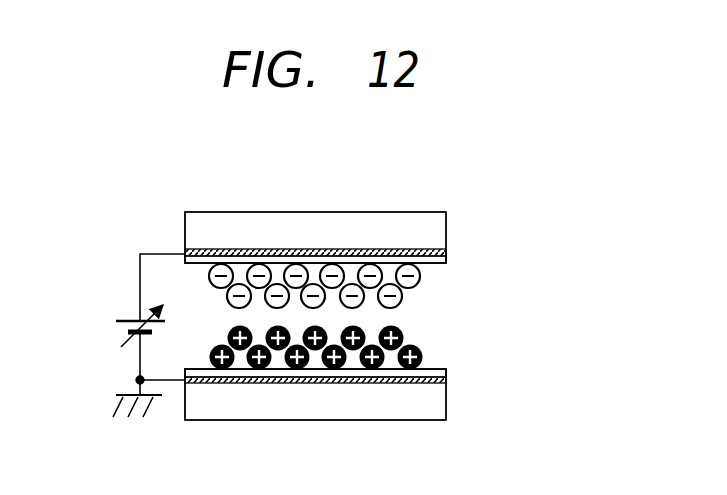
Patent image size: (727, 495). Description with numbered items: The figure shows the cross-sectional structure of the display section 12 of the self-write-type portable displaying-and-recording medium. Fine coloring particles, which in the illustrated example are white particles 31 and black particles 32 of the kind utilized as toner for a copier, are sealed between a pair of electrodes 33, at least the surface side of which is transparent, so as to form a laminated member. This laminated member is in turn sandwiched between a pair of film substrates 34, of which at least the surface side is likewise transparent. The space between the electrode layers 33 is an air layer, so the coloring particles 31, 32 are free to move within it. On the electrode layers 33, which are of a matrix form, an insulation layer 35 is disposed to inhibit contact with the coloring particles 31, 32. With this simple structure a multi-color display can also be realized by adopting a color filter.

The display section 12 is at (164, 209).
The white particles 31 is at (375, 270).
The black particles 32 is at (404, 334).
The electrodes 33 is at (372, 255).
The film substrates 34 is at (352, 222).
The insulation layer 35 is at (402, 249).